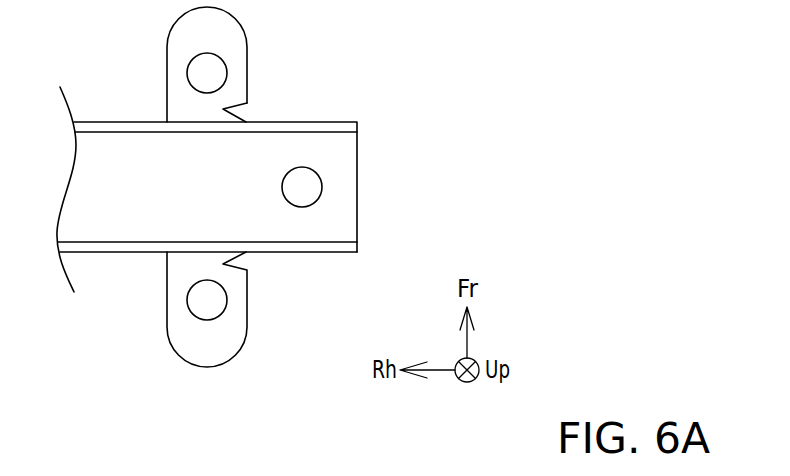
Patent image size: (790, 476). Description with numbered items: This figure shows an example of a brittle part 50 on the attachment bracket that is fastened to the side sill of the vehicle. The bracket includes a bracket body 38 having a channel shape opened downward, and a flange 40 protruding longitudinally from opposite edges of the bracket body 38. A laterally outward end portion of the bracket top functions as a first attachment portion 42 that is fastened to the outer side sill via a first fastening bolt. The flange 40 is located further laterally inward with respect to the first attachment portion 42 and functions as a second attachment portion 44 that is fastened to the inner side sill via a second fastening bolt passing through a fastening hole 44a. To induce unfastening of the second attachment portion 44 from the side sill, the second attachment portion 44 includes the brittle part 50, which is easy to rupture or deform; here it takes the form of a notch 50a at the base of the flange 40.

The brittle part 50 is at (372, 68).
The notch 50a is at (238, 110).
The flange 40 is at (241, 183).
The second attachment portion 44 is at (166, 60).
The fastening hole 44a is at (203, 62).
The first attachment portion 42 is at (340, 217).
The bracket body 38 is at (303, 254).